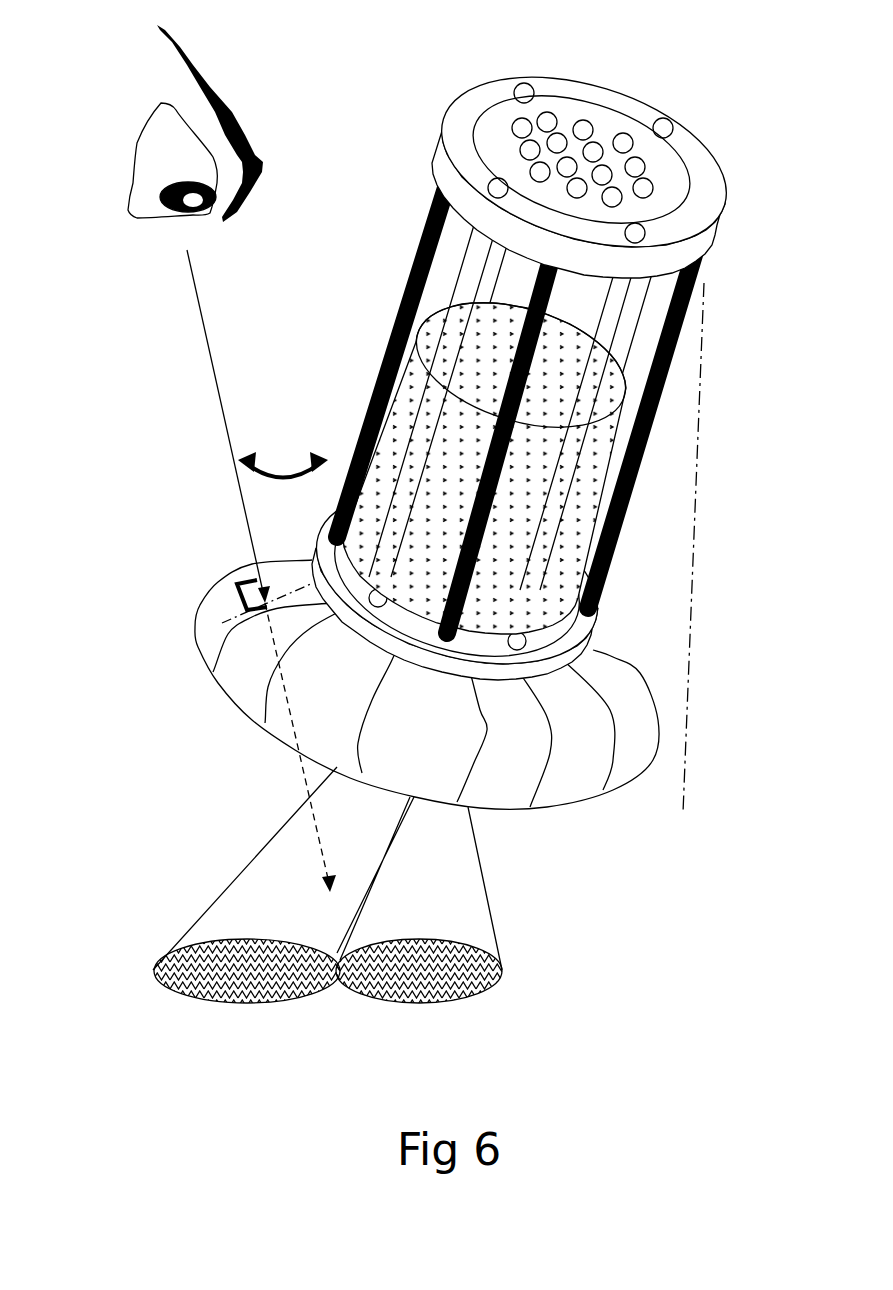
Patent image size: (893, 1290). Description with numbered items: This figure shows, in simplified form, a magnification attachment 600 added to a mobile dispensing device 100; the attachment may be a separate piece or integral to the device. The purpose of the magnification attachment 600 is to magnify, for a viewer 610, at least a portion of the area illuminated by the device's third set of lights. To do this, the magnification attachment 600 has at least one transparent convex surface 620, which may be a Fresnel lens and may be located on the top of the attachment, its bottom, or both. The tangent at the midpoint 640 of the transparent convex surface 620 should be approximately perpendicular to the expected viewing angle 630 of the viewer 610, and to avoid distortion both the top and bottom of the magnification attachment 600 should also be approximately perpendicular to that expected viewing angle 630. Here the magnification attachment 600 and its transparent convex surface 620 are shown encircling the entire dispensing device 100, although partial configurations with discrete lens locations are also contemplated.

The device 100 is at (678, 100).
The magnification attachment 600 is at (416, 508).
The viewer 610 is at (155, 225).
The transparent convex surface 620 is at (218, 656).
The expected viewing angle 630 is at (287, 463).
The midpoint 640 is at (223, 622).